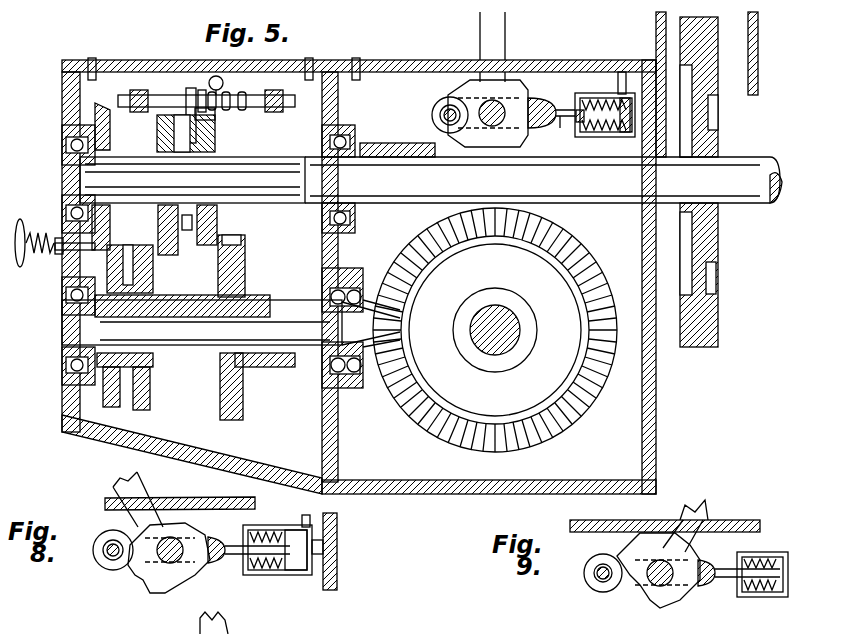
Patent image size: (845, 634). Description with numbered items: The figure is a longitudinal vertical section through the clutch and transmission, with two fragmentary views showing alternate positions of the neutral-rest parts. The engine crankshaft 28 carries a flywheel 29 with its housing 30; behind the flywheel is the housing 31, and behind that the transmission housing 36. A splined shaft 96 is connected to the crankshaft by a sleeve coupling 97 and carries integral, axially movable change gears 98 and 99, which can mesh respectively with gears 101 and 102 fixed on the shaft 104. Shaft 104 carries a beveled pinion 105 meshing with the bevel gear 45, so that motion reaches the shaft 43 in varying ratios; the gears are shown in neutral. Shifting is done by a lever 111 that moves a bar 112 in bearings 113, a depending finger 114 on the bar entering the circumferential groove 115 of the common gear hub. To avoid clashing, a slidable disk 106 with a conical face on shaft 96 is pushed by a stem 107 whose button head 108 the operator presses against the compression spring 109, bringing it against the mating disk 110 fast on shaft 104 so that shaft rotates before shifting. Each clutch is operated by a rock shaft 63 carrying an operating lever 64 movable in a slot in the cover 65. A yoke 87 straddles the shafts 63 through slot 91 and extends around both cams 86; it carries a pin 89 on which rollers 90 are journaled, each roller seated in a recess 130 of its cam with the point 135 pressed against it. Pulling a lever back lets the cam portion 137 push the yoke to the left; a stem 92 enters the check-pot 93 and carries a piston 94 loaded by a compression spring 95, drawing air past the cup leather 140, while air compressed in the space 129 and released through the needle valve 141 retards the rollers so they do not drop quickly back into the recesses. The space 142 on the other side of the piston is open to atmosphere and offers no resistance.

In FIG. 5, the crankshaft 28 is at (733, 170).
In FIG. 5, the flywheel 29 is at (712, 52).
In FIG. 5, the flywheel housing 30 is at (758, 42).
In FIG. 5, the housing 31 is at (648, 385).
In FIG. 8, the housing 31 is at (338, 527).
In FIG. 5, the transmission housing 36 is at (359, 276).
In FIG. 5, the shaft 43 is at (512, 335).
In FIG. 5, the bevel gear 45 is at (575, 252).
In FIG. 5, the rock shaft 63 is at (510, 125).
In FIG. 5, the operating lever 64 is at (505, 32).
In FIG. 8, the operating lever 64 is at (230, 627).
In FIG. 5, the cover 65 is at (462, 78).
In FIG. 8, the cam 86 is at (175, 575).
In FIG. 9, the cam 86 is at (668, 606).
In FIG. 5, the yoke 87 is at (532, 100).
In FIG. 8, the yoke 87 is at (198, 540).
In FIG. 9, the yoke 87 is at (640, 596).
In FIG. 5, the pin 89 is at (446, 106).
In FIG. 5, the roller 90 is at (441, 113).
In FIG. 8, the roller 90 is at (108, 565).
In FIG. 9, the roller 90 is at (592, 578).
In FIG. 5, the slot 91 is at (563, 103).
In FIG. 5, the stem 92 is at (562, 122).
In FIG. 5, the check-pot 93 is at (590, 100).
In FIG. 5, the piston 94 is at (612, 134).
In FIG. 8, the piston 94 is at (278, 570).
In FIG. 9, the piston 94 is at (772, 597).
In FIG. 5, the compression spring 95 is at (584, 132).
In FIG. 5, the splined shaft 96 is at (262, 156).
In FIG. 5, the sleeve coupling 97 is at (425, 122).
In FIG. 5, the gear 98 is at (157, 128).
In FIG. 5, the gear 99 is at (210, 120).
In FIG. 5, the gear 101 is at (150, 272).
In FIG. 5, the gear 102 is at (240, 270).
In FIG. 5, the shaft 104 is at (202, 320).
In FIG. 5, the beveled pinion 105 is at (398, 345).
In FIG. 5, the slidable disk 106 is at (107, 232).
In FIG. 5, the stem 107 is at (58, 260).
In FIG. 5, the button head 108 is at (20, 218).
In FIG. 5, the compression spring 109 is at (40, 230).
In FIG. 5, the mating disk 110 is at (110, 275).
In FIG. 5, the lever 111 is at (222, 82).
In FIG. 5, the bar 112 is at (180, 96).
In FIG. 5, the bearing 113 is at (152, 92).
In FIG. 5, the depending finger 114 is at (202, 92).
In FIG. 5, the circumferential groove 115 is at (187, 228).
In FIG. 8, the space 129 is at (285, 555).
In FIG. 5, the recess 130 is at (488, 113).
In FIG. 5, the point 135 is at (448, 130).
In FIG. 9, the point 135 is at (622, 563).
In FIG. 5, the cam portion 137 is at (446, 92).
In FIG. 8, the cam portion 137 is at (134, 565).
In FIG. 5, the cup leather 140 is at (578, 118).
In FIG. 8, the cup leather 140 is at (318, 547).
In FIG. 9, the cup leather 140 is at (788, 572).
In FIG. 5, the needle valve 141 is at (666, 88).
In FIG. 8, the needle valve 141 is at (302, 520).
In FIG. 5, the space 142 is at (618, 78).